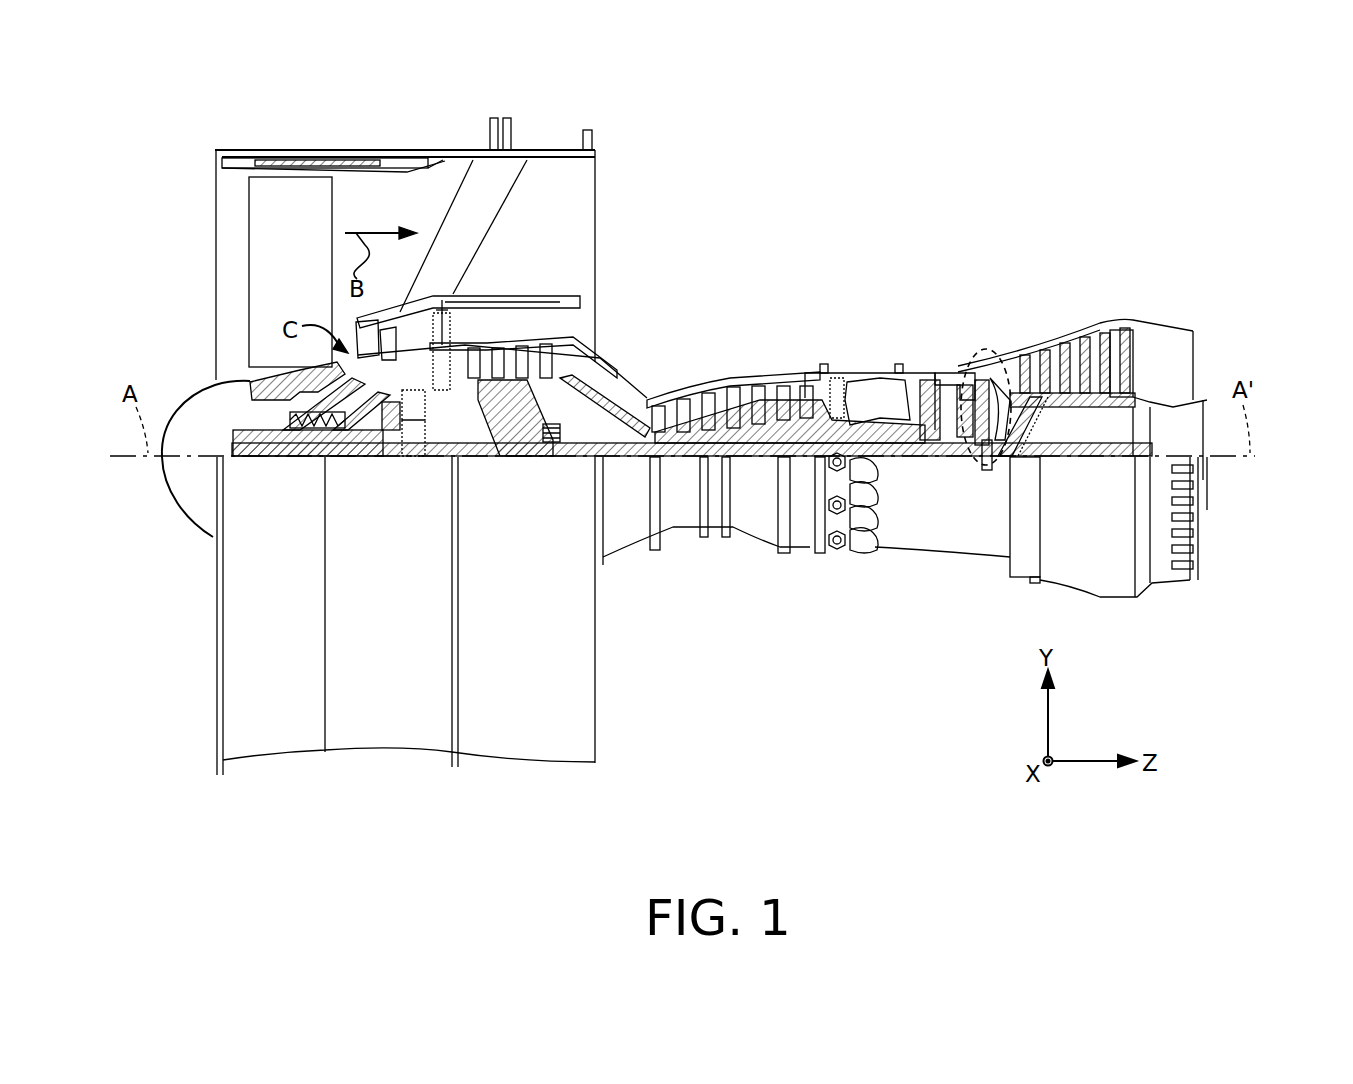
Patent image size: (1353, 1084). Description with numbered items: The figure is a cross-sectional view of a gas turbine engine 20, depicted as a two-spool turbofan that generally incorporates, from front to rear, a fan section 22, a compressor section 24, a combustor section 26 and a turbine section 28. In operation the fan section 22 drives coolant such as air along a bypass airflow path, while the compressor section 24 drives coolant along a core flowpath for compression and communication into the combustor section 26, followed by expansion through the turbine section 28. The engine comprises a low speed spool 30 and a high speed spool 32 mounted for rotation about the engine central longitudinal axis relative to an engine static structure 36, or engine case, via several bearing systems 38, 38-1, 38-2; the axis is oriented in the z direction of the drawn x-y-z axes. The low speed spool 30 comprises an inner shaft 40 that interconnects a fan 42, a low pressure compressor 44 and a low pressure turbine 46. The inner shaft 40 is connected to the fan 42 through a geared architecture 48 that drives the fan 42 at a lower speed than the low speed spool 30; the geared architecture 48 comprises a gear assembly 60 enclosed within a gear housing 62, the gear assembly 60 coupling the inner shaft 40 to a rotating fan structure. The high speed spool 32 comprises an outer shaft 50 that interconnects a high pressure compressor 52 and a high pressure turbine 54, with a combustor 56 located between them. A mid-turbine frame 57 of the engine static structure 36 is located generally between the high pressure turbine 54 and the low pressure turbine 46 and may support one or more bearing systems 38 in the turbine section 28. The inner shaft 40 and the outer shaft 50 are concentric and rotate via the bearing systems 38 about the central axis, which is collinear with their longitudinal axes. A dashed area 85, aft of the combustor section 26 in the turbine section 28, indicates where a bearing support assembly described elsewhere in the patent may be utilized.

The gas turbine engine 20 is at (926, 138).
The fan section 22 is at (430, 131).
The compressor section 24 is at (453, 258).
The combustor section 26 is at (927, 258).
The turbine section 28 is at (1143, 258).
The low speed spool 30 is at (758, 472).
The high speed spool 32 is at (810, 408).
The engine static structure 36 is at (800, 525).
The bearing system 38 is at (985, 460).
The bearing system 38-1 is at (328, 430).
The bearing system 38-2 is at (548, 440).
The inner shaft 40 is at (618, 457).
The fan 42 is at (292, 267).
The low pressure compressor 44 is at (524, 348).
The low pressure turbine 46 is at (1080, 330).
The geared architecture 48 is at (401, 494).
The outer shaft 50 is at (872, 435).
The high pressure compressor 52 is at (755, 385).
The high pressure turbine 54 is at (945, 375).
The combustor 56 is at (880, 390).
The mid-turbine frame 57 is at (985, 365).
The gear assembly 60 is at (430, 420).
The gear housing 62 is at (430, 396).
The area 85 is at (1030, 430).